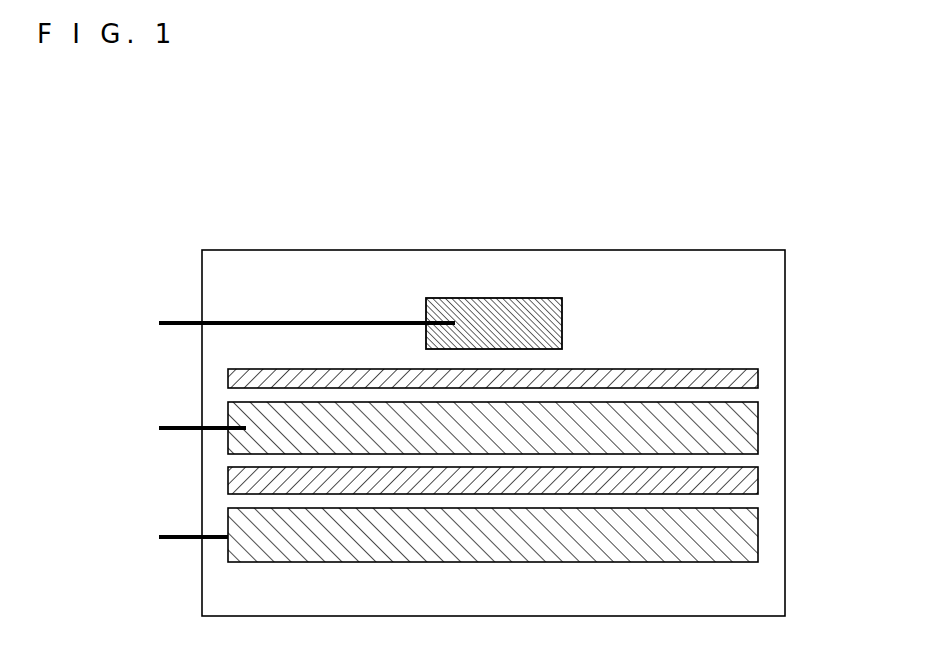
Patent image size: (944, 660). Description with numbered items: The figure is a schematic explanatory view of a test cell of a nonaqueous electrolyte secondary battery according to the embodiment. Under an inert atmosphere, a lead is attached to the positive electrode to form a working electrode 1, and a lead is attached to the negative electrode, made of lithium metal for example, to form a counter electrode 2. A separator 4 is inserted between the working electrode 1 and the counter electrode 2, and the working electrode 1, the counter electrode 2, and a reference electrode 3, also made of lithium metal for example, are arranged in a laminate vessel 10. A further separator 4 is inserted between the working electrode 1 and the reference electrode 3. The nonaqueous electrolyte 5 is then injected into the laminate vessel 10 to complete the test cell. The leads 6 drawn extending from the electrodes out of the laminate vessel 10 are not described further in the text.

The laminate vessel 10 is at (261, 250).
The nonaqueous electrolyte 5 is at (683, 297).
The reference electrode 3 is at (500, 317).
The separator 4 is at (750, 378).
The working electrode 1 is at (750, 425).
The counter electrode 2 is at (750, 532).
The lead wire terminal 6 is at (173, 322).